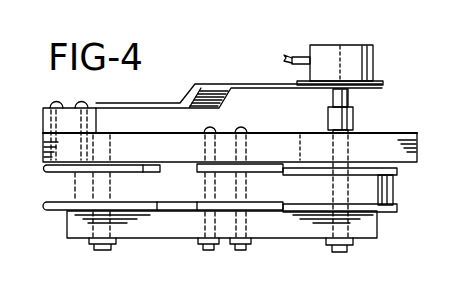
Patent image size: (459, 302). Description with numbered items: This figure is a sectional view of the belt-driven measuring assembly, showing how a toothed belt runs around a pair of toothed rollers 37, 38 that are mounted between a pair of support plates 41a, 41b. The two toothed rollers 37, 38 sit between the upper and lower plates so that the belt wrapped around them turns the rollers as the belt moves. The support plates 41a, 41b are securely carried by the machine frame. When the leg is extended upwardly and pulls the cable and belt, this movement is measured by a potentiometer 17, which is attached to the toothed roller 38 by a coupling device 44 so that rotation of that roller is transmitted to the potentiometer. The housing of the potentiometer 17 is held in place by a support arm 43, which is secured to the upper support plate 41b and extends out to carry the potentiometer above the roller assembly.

The potentiometer 17 is at (331, 52).
The toothed roller 37 is at (53, 207).
The toothed roller 38 is at (398, 208).
The support plate 41a is at (272, 232).
The support plate 41b is at (283, 133).
The support arm 43 is at (236, 84).
The coupling device 44 is at (353, 116).